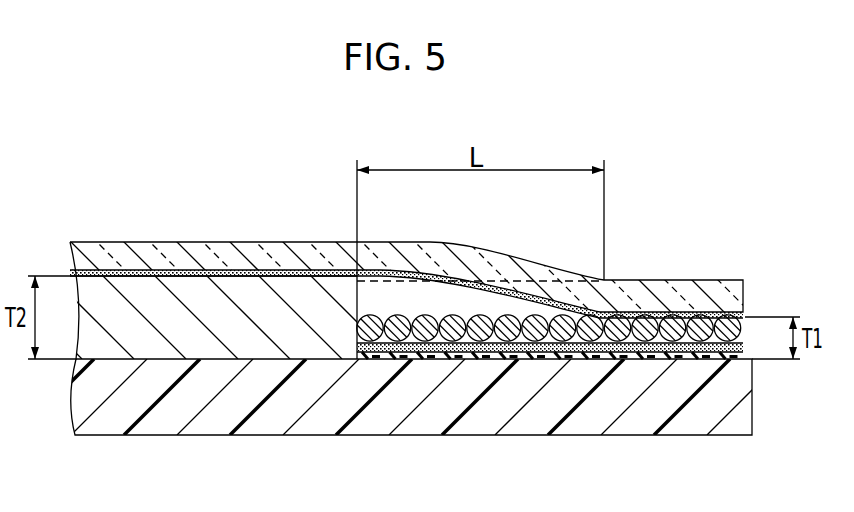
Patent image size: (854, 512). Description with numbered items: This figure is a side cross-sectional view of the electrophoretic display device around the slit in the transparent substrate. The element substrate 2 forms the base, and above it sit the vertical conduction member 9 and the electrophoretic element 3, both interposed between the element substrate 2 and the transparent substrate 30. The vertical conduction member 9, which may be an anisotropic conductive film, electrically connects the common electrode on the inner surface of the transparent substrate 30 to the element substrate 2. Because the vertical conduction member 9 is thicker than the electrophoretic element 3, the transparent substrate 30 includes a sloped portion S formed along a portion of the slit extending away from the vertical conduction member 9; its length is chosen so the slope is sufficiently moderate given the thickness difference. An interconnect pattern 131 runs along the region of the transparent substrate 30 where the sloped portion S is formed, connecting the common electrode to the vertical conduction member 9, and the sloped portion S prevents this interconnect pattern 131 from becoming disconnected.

The element substrate 2 is at (529, 425).
The electrophoretic element 3 is at (707, 300).
The vertical conduction member 9 is at (138, 287).
The transparent substrate 30 is at (216, 247).
The interconnect pattern 131 is at (291, 275).
The sloped portion S is at (468, 230).